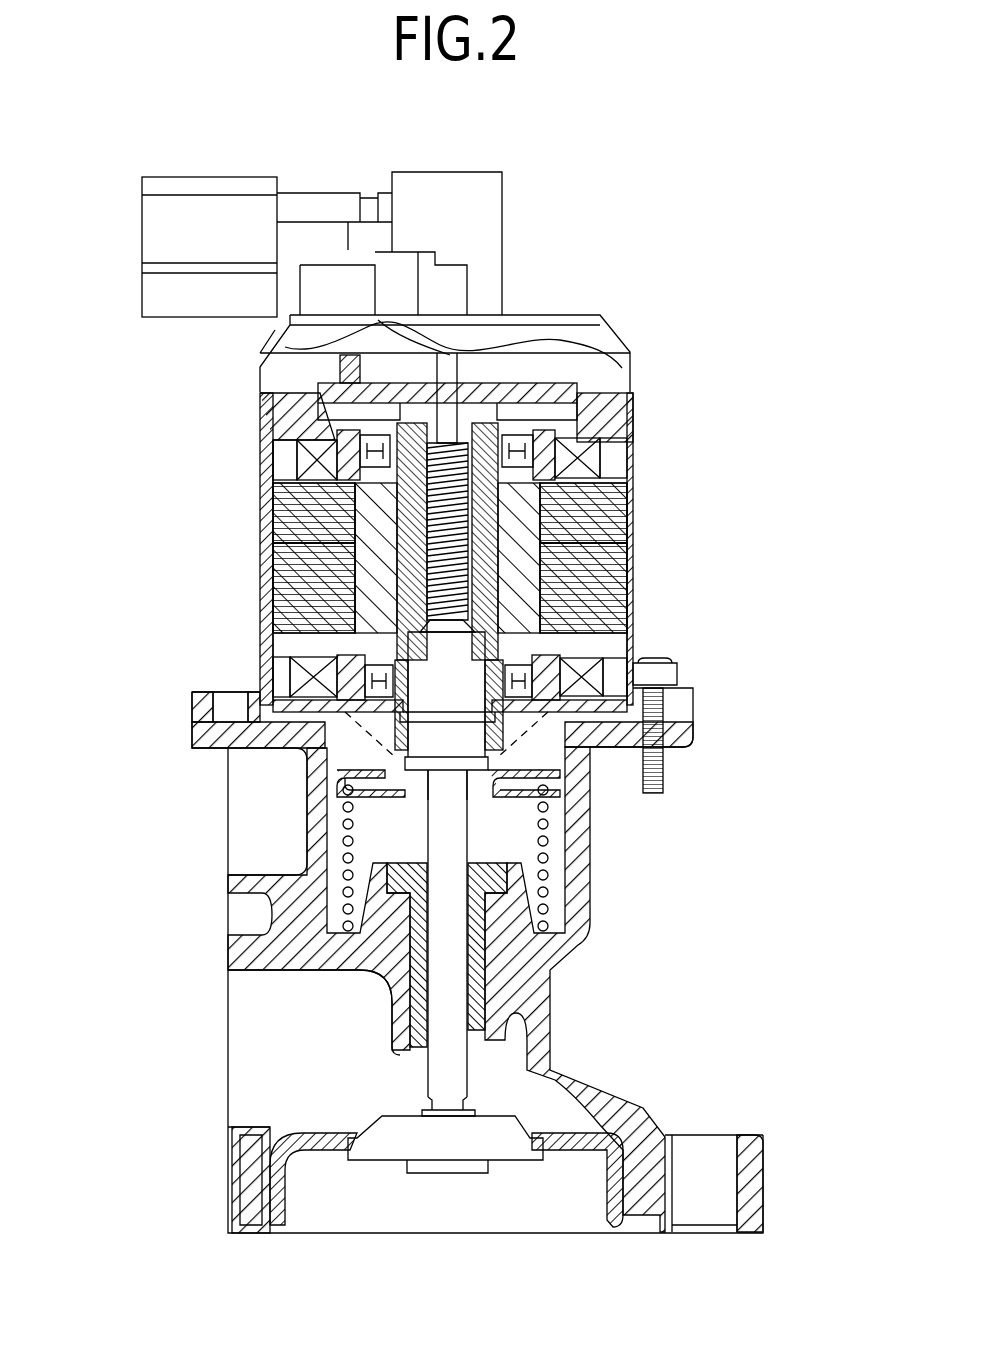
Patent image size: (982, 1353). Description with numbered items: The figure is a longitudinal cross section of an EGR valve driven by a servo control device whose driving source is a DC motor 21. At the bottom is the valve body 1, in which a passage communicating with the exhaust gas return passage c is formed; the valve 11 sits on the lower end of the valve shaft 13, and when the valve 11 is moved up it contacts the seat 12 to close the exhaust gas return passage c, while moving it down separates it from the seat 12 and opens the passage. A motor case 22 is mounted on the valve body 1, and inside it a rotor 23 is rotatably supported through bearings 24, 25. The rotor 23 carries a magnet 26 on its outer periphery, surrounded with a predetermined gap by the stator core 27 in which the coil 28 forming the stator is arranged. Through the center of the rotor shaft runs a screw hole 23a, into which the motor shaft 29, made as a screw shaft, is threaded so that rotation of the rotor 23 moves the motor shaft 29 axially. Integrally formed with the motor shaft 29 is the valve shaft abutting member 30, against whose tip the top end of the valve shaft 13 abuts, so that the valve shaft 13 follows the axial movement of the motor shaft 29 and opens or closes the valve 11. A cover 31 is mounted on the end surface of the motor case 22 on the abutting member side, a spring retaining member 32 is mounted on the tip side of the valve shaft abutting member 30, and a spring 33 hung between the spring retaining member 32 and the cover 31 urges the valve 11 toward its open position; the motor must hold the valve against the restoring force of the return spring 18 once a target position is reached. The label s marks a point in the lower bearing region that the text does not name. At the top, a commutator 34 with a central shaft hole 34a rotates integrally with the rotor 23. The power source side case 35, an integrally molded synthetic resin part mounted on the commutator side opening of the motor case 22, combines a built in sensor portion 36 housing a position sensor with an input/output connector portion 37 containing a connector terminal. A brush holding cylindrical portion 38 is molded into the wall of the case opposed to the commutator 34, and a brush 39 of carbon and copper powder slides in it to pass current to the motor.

The valve body 1 is at (690, 758).
The valve 11 is at (525, 1153).
The seat 12 is at (320, 1148).
The valve shaft 13 is at (448, 1078).
The return spring 18 is at (548, 910).
The DC motor 21 is at (652, 506).
The motor case 22 is at (650, 406).
The rotor 23 is at (498, 522).
The screw hole 23a is at (507, 603).
The bearing 24 is at (275, 500).
The bearing 25 is at (615, 648).
The magnet 26 is at (372, 612).
The stator core 27 is at (615, 608).
The coil 28 is at (592, 455).
The motor shaft 29 is at (397, 543).
The valve shaft abutting member 30 is at (445, 740).
The cover 31 is at (556, 726).
The spring retaining member 32 is at (400, 797).
The spring 33 is at (600, 712).
The commutator 34 is at (273, 420).
The shaft hole 34a is at (456, 380).
The power source side case 35 is at (645, 337).
The built in sensor portion 36 is at (487, 190).
The input/output connector portion 37 is at (142, 213).
The brush holding cylindrical portion 38 is at (352, 345).
The brush 39 is at (378, 320).
The lower bearing s is at (258, 642).
The exhaust gas return passage c is at (235, 1058).